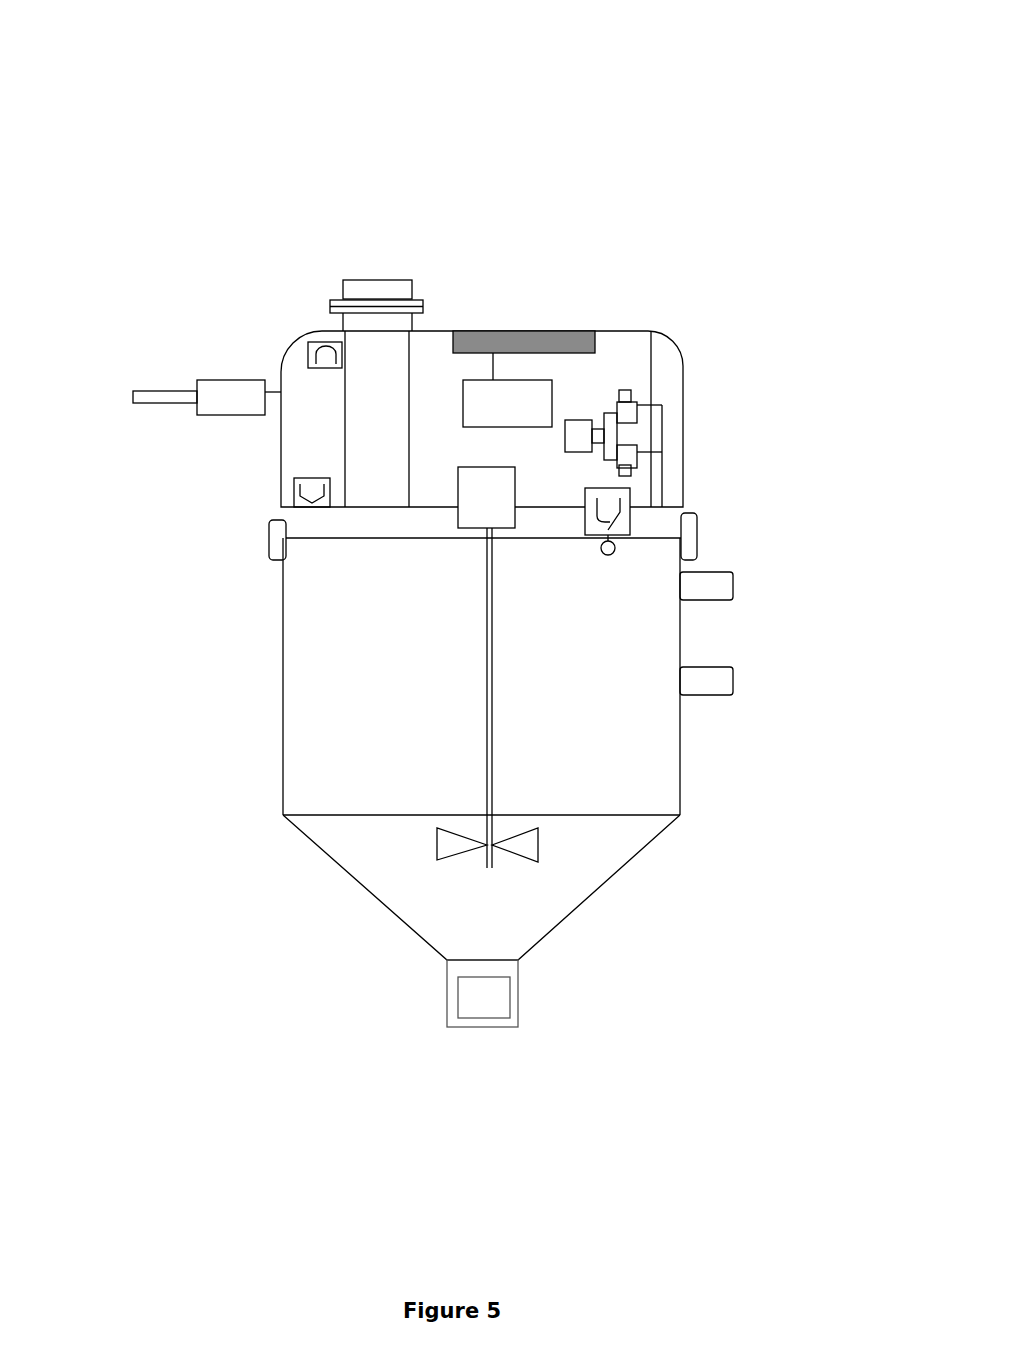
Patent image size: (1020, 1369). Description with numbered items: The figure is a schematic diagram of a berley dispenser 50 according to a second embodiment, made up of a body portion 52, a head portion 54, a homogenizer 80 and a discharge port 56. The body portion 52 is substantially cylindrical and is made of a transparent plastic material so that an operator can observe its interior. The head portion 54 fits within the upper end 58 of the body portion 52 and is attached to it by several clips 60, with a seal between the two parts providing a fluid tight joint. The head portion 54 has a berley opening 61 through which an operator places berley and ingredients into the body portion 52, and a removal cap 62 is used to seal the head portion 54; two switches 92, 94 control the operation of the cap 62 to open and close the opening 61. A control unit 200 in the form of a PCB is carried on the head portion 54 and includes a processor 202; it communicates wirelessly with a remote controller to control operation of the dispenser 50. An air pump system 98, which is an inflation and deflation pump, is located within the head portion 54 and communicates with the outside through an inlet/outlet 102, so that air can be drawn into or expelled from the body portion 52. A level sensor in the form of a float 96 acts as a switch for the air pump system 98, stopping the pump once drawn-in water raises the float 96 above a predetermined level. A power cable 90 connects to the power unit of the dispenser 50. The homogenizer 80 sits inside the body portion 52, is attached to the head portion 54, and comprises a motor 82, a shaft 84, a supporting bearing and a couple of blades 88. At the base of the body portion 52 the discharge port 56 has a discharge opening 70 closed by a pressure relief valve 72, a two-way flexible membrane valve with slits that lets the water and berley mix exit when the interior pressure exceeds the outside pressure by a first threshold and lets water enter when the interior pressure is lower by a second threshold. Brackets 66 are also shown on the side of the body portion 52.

The berley dispenser 50 is at (752, 165).
The body portion 52 is at (677, 742).
The head portion 54 is at (677, 353).
The discharge port 56 is at (457, 1040).
The upper end 58 is at (342, 540).
The clips 60 is at (267, 553).
The berley opening 61 is at (370, 360).
The removal cap 62 is at (370, 277).
The mounting bracket 66 is at (733, 588).
The discharge opening 70 is at (515, 1017).
The pressure relief valve 72 is at (492, 968).
The homogenizer 80 is at (412, 655).
The motor 82 is at (460, 515).
The shaft 84 is at (487, 660).
The blades 88 is at (437, 847).
The power cable 90 is at (220, 378).
The switch 92 is at (320, 350).
The switch 94 is at (300, 503).
The float 96 is at (630, 513).
The air pump system 98 is at (637, 415).
The inlet/outlet 102 is at (653, 331).
The control unit 200 is at (518, 326).
The processor 202 is at (463, 400).